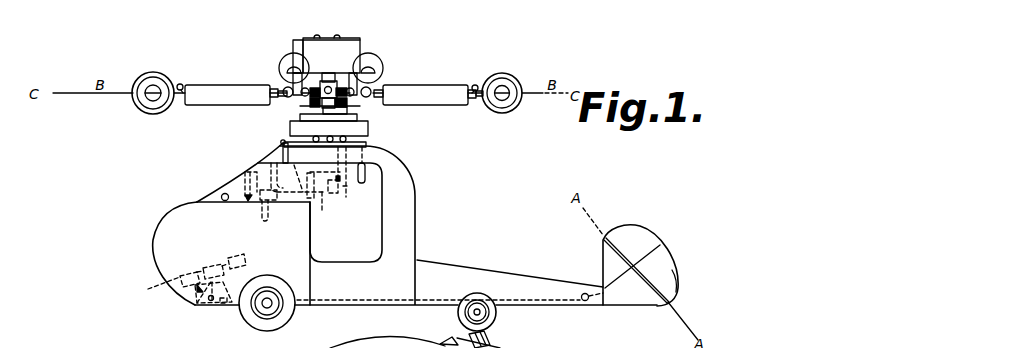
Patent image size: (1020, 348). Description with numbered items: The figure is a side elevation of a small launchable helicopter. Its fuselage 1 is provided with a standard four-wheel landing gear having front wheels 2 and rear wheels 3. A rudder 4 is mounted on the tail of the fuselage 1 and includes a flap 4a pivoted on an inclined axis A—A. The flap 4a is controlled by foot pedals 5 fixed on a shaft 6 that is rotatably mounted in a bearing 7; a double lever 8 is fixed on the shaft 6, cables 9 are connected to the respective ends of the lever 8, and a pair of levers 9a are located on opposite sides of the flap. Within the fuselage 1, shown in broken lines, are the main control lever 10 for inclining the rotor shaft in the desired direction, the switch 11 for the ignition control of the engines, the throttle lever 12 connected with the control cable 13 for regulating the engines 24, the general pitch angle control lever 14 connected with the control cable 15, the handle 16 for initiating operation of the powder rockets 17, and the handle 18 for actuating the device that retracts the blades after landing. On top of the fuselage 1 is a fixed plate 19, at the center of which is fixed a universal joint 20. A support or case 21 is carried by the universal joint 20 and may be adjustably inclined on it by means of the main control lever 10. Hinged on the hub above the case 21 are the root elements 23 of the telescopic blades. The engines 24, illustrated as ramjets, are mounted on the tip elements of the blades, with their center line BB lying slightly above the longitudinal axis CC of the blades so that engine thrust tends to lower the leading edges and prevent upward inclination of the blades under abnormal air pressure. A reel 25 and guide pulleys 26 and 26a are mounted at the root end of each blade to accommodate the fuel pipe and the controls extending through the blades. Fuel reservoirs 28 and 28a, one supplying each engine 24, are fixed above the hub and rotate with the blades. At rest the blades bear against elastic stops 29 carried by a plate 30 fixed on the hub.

The fuselage 1 is at (347, 293).
The front wheels 2 is at (268, 325).
The rear wheels 3 is at (497, 313).
The rudder 4 is at (630, 293).
The flap 4a is at (681, 280).
The foot pedals 5 is at (210, 301).
The shaft 6 is at (212, 265).
The bearing 7 is at (213, 305).
The double lever 8 is at (200, 297).
The cables 9 is at (224, 304).
The levers 9a is at (643, 258).
The main control lever 10 is at (265, 170).
The switch 11 is at (221, 196).
The throttle lever 12 is at (244, 174).
The control cable 13 is at (324, 200).
The general pitch angle control lever 14 is at (302, 196).
The control cable 15 is at (300, 181).
The handle 16 is at (348, 188).
The powder rockets 17 is at (184, 85).
The handle 18 is at (367, 183).
The fixed plate 19 is at (366, 146).
The universal joint 20 is at (344, 139).
The case 21 is at (290, 128).
The root elements 23 is at (228, 90).
The engines 24 is at (164, 80).
The reel 25 is at (290, 59).
The guide pulleys 26 is at (285, 90).
The guide pulley 26a is at (322, 80).
The fuel reservoir 28 is at (296, 40).
The fuel reservoir 28a is at (344, 45).
The elastic stops 29 is at (312, 103).
The plate 30 is at (344, 103).